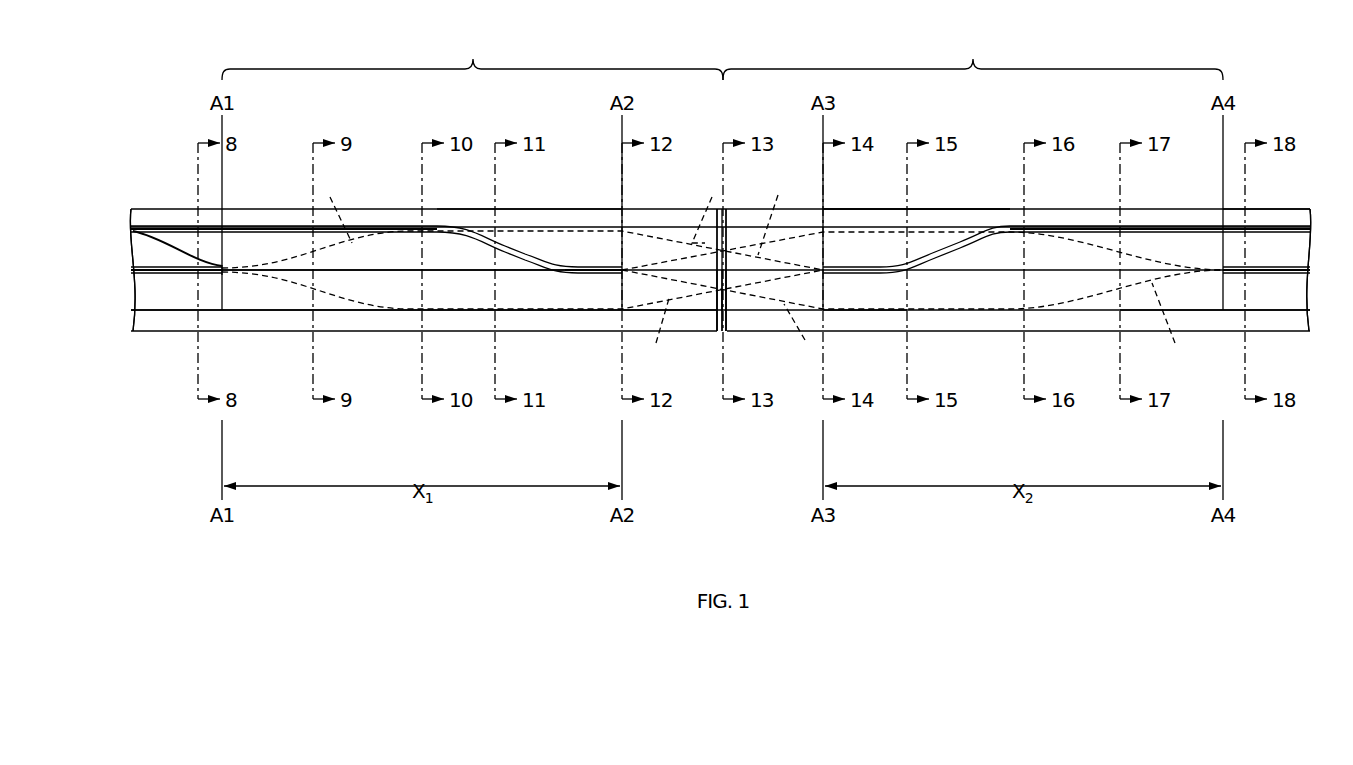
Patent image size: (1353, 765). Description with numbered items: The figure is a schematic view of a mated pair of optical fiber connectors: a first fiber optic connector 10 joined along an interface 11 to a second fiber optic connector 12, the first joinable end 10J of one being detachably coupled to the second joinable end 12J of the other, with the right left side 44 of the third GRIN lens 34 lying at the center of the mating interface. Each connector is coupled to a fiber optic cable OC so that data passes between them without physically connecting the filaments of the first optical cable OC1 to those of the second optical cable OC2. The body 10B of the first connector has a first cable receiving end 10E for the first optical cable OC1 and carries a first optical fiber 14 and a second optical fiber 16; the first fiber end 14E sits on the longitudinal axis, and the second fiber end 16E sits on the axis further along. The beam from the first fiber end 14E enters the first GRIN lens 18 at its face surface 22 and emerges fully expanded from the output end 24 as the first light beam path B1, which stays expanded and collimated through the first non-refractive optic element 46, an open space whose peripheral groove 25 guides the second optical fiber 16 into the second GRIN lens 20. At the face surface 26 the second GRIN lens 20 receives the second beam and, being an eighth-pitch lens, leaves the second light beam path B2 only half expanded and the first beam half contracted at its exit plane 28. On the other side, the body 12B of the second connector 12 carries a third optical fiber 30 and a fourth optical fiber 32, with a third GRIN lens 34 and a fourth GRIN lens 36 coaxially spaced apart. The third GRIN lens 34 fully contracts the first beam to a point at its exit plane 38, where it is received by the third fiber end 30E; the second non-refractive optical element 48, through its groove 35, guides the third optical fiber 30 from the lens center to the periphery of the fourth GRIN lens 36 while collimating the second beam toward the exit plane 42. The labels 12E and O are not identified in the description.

The first fiber optic connector 10 is at (472, 57).
The second fiber optic connector 12 is at (973, 57).
The second optical fiber 16 is at (158, 226).
The face surface 22 is at (134, 234).
The fiber optic cable OC is at (126, 298).
The first optical cable OC1 is at (140, 300).
The first optical fiber 14 is at (192, 275).
The first fiber end 14E is at (223, 277).
The first GRIN lens 18 is at (277, 297).
The first cable receiving end 10E is at (223, 258).
The output end 24 is at (422, 264).
The groove 25 is at (478, 244).
The first non-refractive optic element 46 is at (527, 245).
The face surface 26 is at (620, 262).
The second fiber end 16E is at (622, 262).
The first light beam path B1 is at (722, 220).
The second light beam path B2 is at (722, 319).
The exit plane 28 is at (724, 245).
The third fiber end 30E is at (823, 268).
The exit plane 38 is at (827, 243).
The groove 35 is at (925, 262).
The second non-refractive optical element 48 is at (938, 240).
The exit plane 42 is at (1026, 243).
The second section end 12E is at (1222, 255).
The third optical fiber 30 is at (1287, 226).
The cable axis O is at (1322, 284).
The second optical cable OC2 is at (1310, 302).
The fourth optical fiber 32 is at (1262, 273).
The fourth GRIN lens 36 is at (1193, 298).
The body 12B is at (1067, 322).
The third GRIN lens 34 is at (817, 290).
The second joinable end 12J is at (738, 298).
The interface 11 is at (729, 312).
The right left side 44 is at (722, 305).
The first joinable end 10J is at (709, 295).
The second GRIN lens 20 is at (627, 293).
The body 10B is at (527, 318).